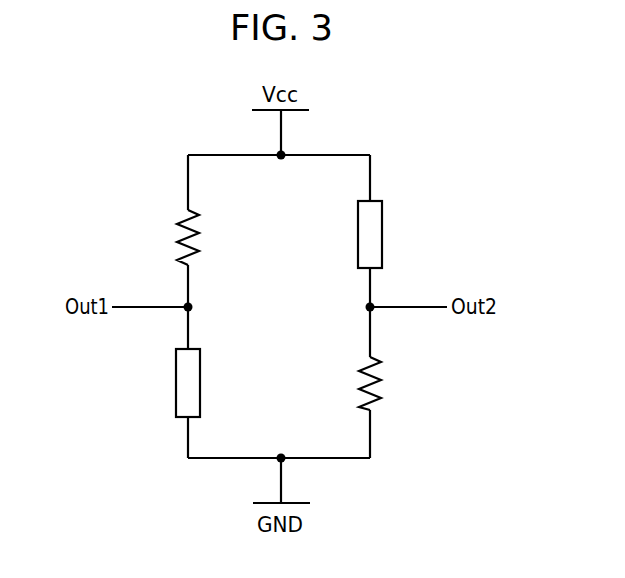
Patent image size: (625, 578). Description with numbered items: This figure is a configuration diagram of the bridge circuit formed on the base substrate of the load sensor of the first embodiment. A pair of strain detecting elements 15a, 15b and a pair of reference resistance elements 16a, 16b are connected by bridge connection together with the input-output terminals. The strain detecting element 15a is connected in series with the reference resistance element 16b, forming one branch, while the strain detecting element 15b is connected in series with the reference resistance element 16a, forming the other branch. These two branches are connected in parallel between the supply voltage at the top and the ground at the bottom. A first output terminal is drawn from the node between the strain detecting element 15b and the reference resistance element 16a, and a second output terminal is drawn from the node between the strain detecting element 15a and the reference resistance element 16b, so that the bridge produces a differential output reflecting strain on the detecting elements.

The strain detecting element 15a is at (383, 229).
The strain detecting element 15b is at (176, 402).
The reference resistance element 16a is at (183, 230).
The reference resistance element 16b is at (380, 392).